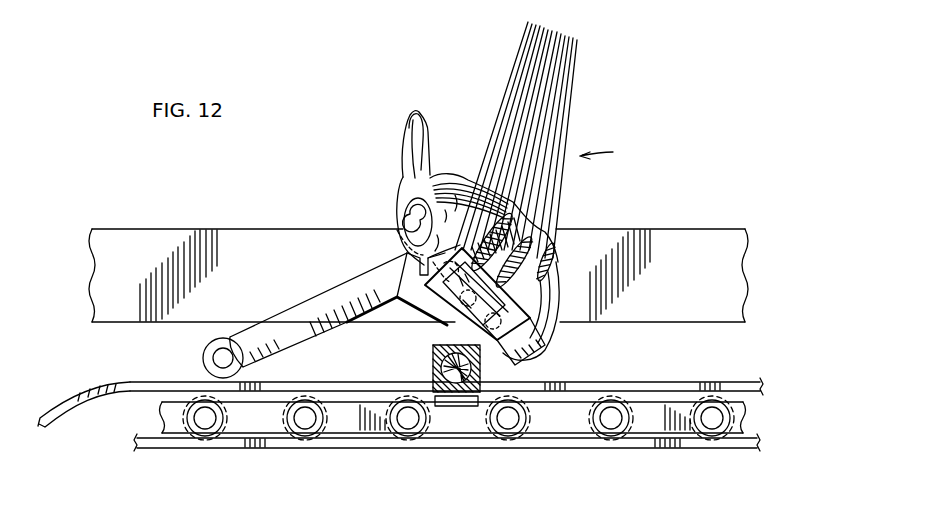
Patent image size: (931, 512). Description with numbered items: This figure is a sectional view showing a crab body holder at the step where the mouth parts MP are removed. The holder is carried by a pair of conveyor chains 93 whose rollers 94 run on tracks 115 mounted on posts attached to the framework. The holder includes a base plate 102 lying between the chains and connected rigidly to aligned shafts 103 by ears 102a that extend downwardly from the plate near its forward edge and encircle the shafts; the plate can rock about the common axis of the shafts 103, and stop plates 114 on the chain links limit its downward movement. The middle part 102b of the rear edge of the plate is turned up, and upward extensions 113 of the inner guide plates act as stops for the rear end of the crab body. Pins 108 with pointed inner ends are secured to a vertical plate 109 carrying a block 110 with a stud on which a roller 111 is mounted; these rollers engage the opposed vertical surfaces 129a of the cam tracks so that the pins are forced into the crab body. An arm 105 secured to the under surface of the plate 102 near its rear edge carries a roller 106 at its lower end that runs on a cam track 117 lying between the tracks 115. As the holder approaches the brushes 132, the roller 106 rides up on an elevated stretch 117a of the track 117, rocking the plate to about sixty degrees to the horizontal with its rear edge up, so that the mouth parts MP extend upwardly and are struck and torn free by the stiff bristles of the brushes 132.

The opposed vertical surfaces 129a is at (224, 242).
The cam track 117 is at (677, 384).
The elevated stretch 117a is at (134, 382).
The conveyor chains 93 is at (655, 427).
The rollers 94 is at (611, 398).
The tracks 115 is at (224, 445).
The shafts 103 is at (433, 365).
The stop plates 114 is at (461, 406).
The roller 106 is at (218, 340).
The arm 105 is at (296, 312).
The vertical plate 109 is at (421, 305).
The pins 108 is at (398, 262).
The base plate 102 is at (458, 318).
The ears 102a is at (512, 370).
The middle part of the rear edge 102b is at (402, 236).
The upward extensions 113 is at (549, 330).
The brushes 132 is at (546, 101).
The mouth parts MP is at (405, 137).
The roller 111 is at (537, 275).
The block 110 is at (537, 297).